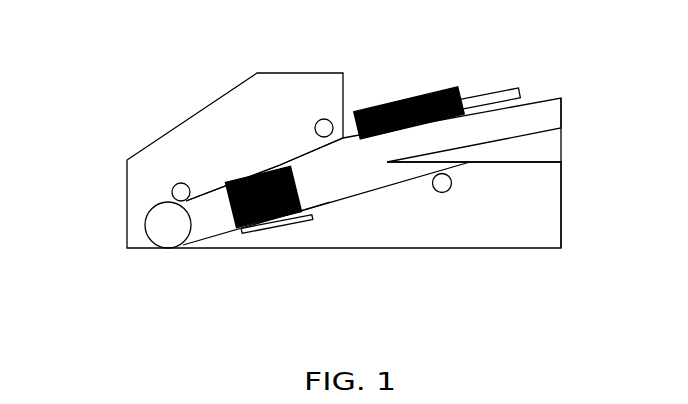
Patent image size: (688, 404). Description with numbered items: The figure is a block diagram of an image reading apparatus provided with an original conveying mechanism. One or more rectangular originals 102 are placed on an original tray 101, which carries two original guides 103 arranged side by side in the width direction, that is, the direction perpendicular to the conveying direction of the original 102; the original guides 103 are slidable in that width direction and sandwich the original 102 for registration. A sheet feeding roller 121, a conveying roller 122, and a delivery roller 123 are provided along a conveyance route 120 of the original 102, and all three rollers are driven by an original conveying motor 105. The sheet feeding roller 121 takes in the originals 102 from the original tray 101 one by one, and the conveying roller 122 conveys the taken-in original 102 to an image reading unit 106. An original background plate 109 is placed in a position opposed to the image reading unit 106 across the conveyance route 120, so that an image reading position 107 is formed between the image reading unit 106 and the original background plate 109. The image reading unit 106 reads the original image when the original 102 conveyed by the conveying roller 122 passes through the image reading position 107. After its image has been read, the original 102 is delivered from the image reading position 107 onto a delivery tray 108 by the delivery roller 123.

The original tray 101 is at (562, 97).
The original 102 is at (507, 84).
The original guide 103 is at (437, 86).
The original conveying motor 105 is at (157, 206).
The image reading unit 106 is at (240, 180).
The image reading position 107 is at (315, 213).
The delivery tray 108 is at (550, 162).
The original background plate 109 is at (245, 235).
The conveyance route 120 is at (280, 168).
The sheet feeding roller 121 is at (324, 119).
The conveying roller 122 is at (179, 183).
The delivery roller 123 is at (443, 193).